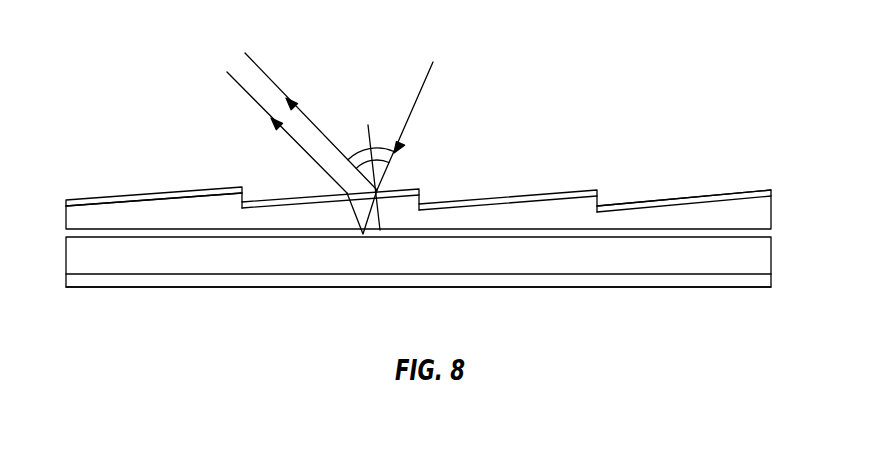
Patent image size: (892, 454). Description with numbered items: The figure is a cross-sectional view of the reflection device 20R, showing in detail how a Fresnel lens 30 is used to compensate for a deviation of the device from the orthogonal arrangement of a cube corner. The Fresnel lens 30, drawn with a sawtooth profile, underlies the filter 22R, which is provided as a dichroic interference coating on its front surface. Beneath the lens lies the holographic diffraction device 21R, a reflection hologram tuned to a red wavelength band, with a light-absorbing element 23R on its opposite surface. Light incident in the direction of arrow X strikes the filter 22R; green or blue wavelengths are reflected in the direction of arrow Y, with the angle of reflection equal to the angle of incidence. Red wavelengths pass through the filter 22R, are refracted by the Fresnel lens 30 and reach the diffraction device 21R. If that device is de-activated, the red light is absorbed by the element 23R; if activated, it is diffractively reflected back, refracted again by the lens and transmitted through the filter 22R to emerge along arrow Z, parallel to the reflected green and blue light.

The reflection device 20R is at (500, 187).
The holographic diffraction device 21R is at (648, 261).
The filter 22R is at (618, 203).
The light-absorbing element 23R is at (546, 282).
The Fresnel lens 30 is at (183, 212).
The arrow X is at (422, 92).
The arrow Y is at (278, 88).
The arrow Z is at (232, 77).